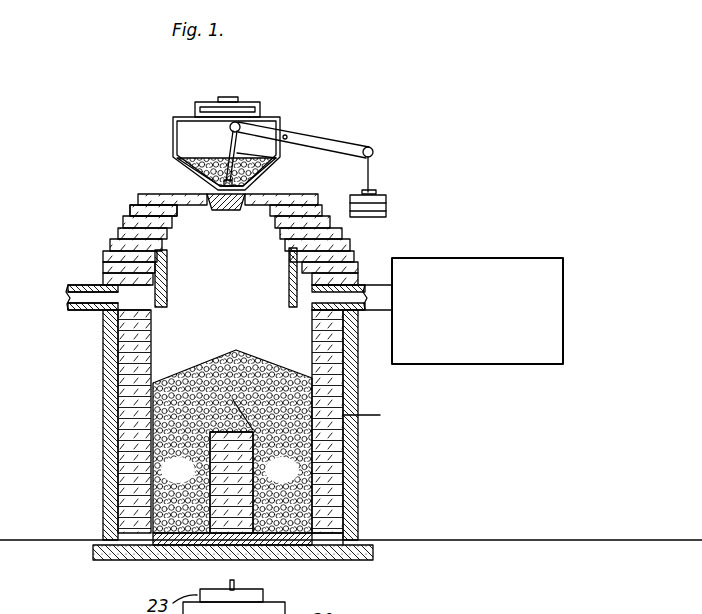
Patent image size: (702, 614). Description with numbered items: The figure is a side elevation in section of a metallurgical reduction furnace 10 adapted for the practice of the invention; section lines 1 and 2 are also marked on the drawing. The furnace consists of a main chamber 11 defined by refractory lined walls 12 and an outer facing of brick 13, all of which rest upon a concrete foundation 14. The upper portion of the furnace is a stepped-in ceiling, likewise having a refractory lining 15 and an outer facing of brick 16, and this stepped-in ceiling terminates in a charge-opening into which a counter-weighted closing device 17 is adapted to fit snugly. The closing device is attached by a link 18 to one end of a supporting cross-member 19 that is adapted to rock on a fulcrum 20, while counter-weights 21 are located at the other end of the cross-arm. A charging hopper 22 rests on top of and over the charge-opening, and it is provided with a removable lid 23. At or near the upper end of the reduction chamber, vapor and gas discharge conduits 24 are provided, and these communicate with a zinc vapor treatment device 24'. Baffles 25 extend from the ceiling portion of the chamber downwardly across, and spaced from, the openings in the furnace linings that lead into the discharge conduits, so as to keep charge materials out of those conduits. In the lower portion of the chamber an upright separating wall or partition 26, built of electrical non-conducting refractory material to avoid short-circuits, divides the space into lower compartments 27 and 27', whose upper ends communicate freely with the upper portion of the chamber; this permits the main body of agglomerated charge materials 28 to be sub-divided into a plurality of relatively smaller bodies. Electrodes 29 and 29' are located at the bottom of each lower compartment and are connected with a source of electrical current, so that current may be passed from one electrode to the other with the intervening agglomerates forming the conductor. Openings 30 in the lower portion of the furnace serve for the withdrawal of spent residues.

The section line 1- 1 is at (232, 565).
The section line 2- 2 is at (289, 73).
The reduction furnace 10 is at (224, 425).
The main chamber 11 is at (208, 299).
The refractory lined walls 12 is at (152, 336).
The outer facing of brick 13 is at (107, 338).
The concrete foundation 14 is at (112, 558).
The refractory lining 15 is at (171, 224).
The outer facing of brick 16 is at (128, 229).
The counter-weighted closing device 17 is at (232, 212).
The link 18 is at (268, 159).
The supporting cross-member 19 is at (345, 149).
The fulcrum 20 is at (288, 136).
The counter-weights 21 is at (388, 205).
The charging hopper 22 is at (173, 146).
The removable lid 23 is at (200, 103).
The vapor and gas discharge conduits 24 is at (207, 290).
The zinc vapor treatment device 24' is at (477, 326).
The baffles 25 is at (289, 266).
The upright separating walls or partitions 26 is at (360, 418).
The lower compartment 27 is at (207, 466).
The lower compartment 27' is at (282, 470).
The agglomerated charge materials 28 is at (239, 350).
The electrode 29 is at (211, 571).
The electrode 29' is at (345, 566).
The openings 30 is at (103, 500).